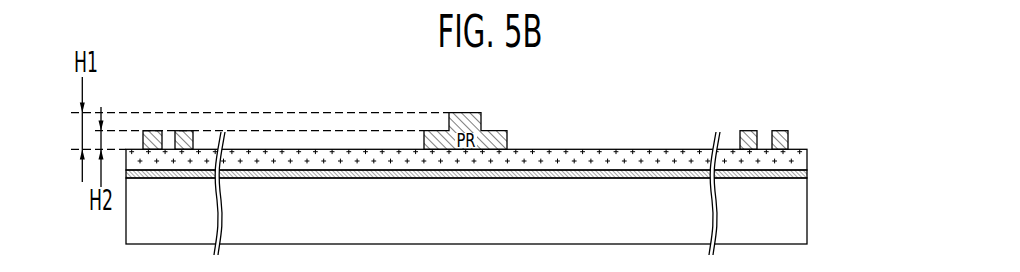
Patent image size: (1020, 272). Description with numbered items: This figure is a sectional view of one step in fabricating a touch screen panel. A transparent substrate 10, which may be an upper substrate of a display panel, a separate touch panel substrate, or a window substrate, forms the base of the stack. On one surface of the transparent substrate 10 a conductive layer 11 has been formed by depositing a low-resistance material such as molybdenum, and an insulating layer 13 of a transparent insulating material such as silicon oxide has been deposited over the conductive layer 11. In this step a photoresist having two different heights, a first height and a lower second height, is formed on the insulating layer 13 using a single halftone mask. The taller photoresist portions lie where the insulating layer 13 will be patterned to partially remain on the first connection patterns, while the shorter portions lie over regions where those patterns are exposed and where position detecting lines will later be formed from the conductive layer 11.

The transparent substrate 10 is at (804, 210).
The conductive layer 11 is at (807, 172).
The insulating layer 13 is at (807, 159).